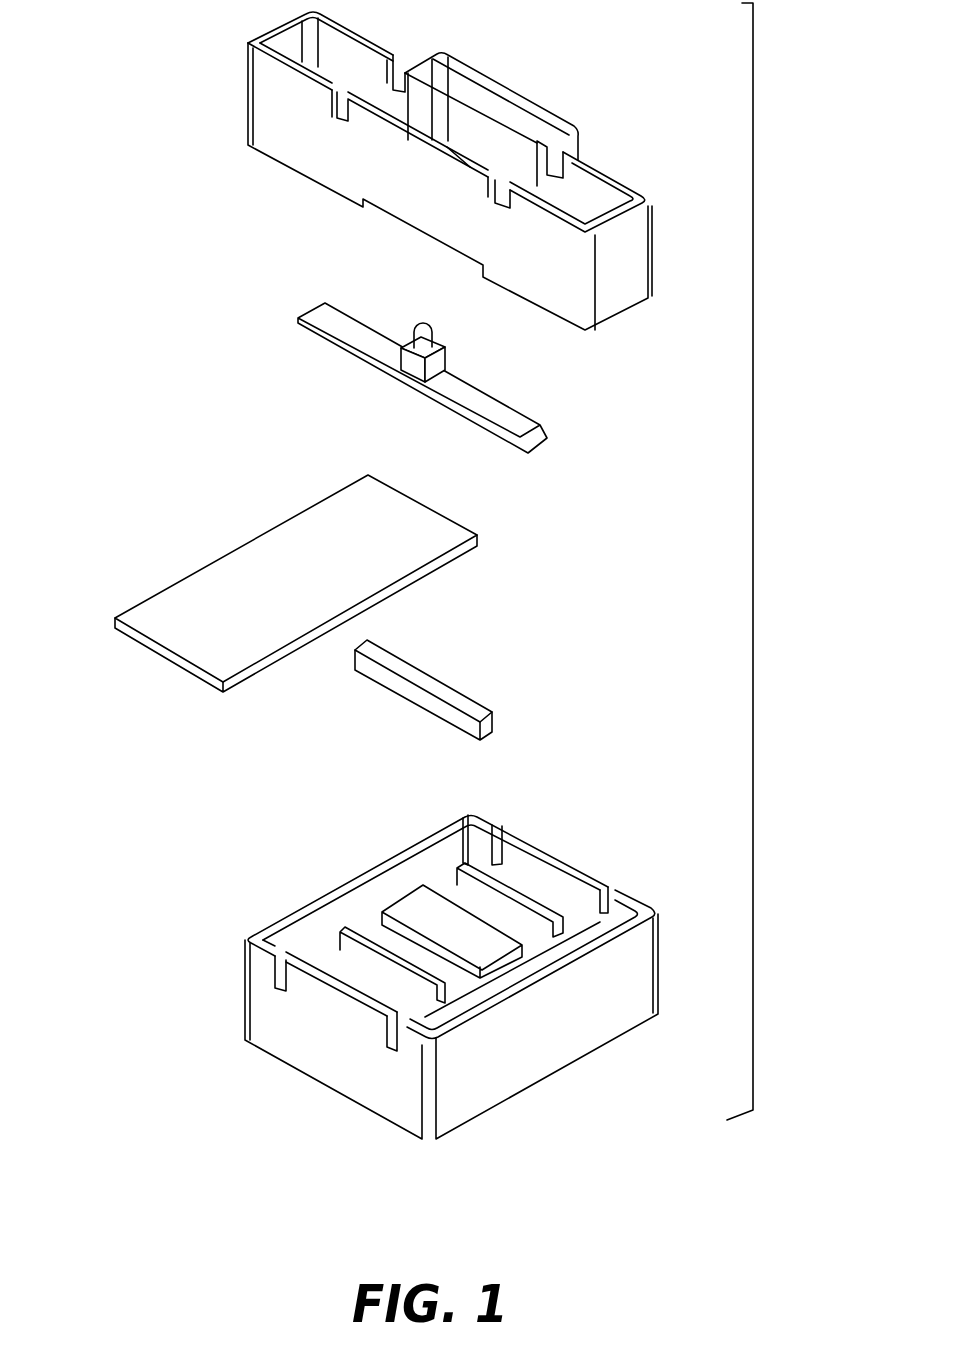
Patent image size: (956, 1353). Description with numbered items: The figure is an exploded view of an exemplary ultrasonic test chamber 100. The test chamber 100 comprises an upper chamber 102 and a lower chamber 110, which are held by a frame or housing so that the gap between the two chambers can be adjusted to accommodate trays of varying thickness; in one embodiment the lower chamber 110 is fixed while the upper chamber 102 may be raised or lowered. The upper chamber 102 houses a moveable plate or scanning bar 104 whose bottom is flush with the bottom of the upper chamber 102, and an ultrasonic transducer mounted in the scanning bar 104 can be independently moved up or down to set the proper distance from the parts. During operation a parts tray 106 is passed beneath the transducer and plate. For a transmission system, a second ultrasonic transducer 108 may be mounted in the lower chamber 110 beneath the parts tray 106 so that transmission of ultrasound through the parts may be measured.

The test chamber 100 is at (233, 1187).
The upper chamber 102 is at (622, 292).
The scanning bar 104 is at (543, 437).
The parts tray 106 is at (455, 553).
The second ultrasonic transducer 108 is at (493, 725).
The lower chamber 110 is at (590, 1027).